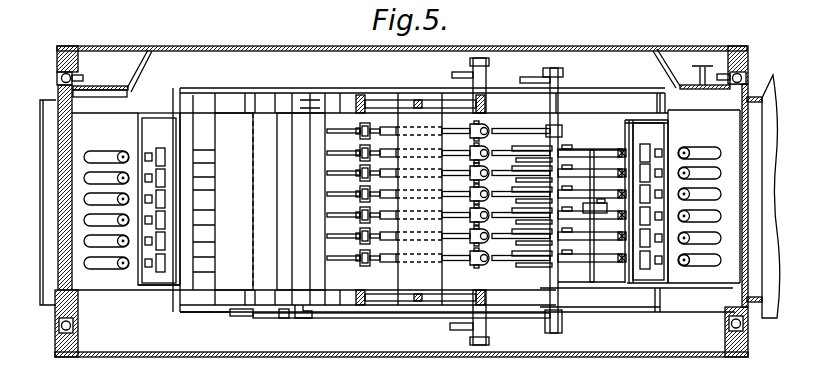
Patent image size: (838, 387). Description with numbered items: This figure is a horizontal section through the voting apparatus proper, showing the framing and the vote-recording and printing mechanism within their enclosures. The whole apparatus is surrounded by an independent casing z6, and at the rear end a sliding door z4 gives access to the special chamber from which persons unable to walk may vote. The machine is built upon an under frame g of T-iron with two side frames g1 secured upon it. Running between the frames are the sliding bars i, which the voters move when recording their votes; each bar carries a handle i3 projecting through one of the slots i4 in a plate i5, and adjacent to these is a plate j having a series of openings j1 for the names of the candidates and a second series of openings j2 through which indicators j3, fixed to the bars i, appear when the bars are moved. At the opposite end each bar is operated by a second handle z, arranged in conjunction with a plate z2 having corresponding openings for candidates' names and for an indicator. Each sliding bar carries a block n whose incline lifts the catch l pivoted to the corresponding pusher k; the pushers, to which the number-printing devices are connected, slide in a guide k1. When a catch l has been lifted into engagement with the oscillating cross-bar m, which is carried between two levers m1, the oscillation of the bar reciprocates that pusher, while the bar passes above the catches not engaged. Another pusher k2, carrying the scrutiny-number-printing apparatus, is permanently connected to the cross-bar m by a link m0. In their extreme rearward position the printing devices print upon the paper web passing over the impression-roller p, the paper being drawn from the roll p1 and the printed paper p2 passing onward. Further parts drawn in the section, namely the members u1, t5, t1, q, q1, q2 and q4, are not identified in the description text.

The independent casing z6 is at (238, 47).
The sliding door z4 is at (63, 203).
The second handle z is at (122, 155).
The plate z2 is at (167, 275).
The impression-roller p is at (318, 272).
The roll of paper p1 is at (223, 201).
The printed paper p2 is at (289, 201).
The guide k1 is at (420, 199).
The pusher k2 is at (450, 127).
The pushers k is at (468, 243).
The sliding bars i is at (333, 173).
The rod holder u1 is at (357, 233).
The catches l is at (510, 252).
The block n is at (540, 253).
The link m0 is at (513, 128).
The levers m1 is at (535, 333).
The oscillating cross-bar m is at (562, 128).
The indicators j3 is at (618, 242).
The vertical bar t5 is at (590, 265).
The bracket t1 is at (612, 213).
The plate j is at (627, 125).
The openings j1 is at (638, 168).
The openings j2 is at (658, 243).
The plate i5 is at (722, 196).
The slots i4 is at (713, 186).
The handle i3 is at (685, 152).
The under frame g is at (580, 88).
The side frames g1 is at (610, 100).
The rod q1 is at (350, 318).
The rod end q4 is at (243, 317).
The rod lug q2 is at (285, 318).
The hook q is at (308, 320).